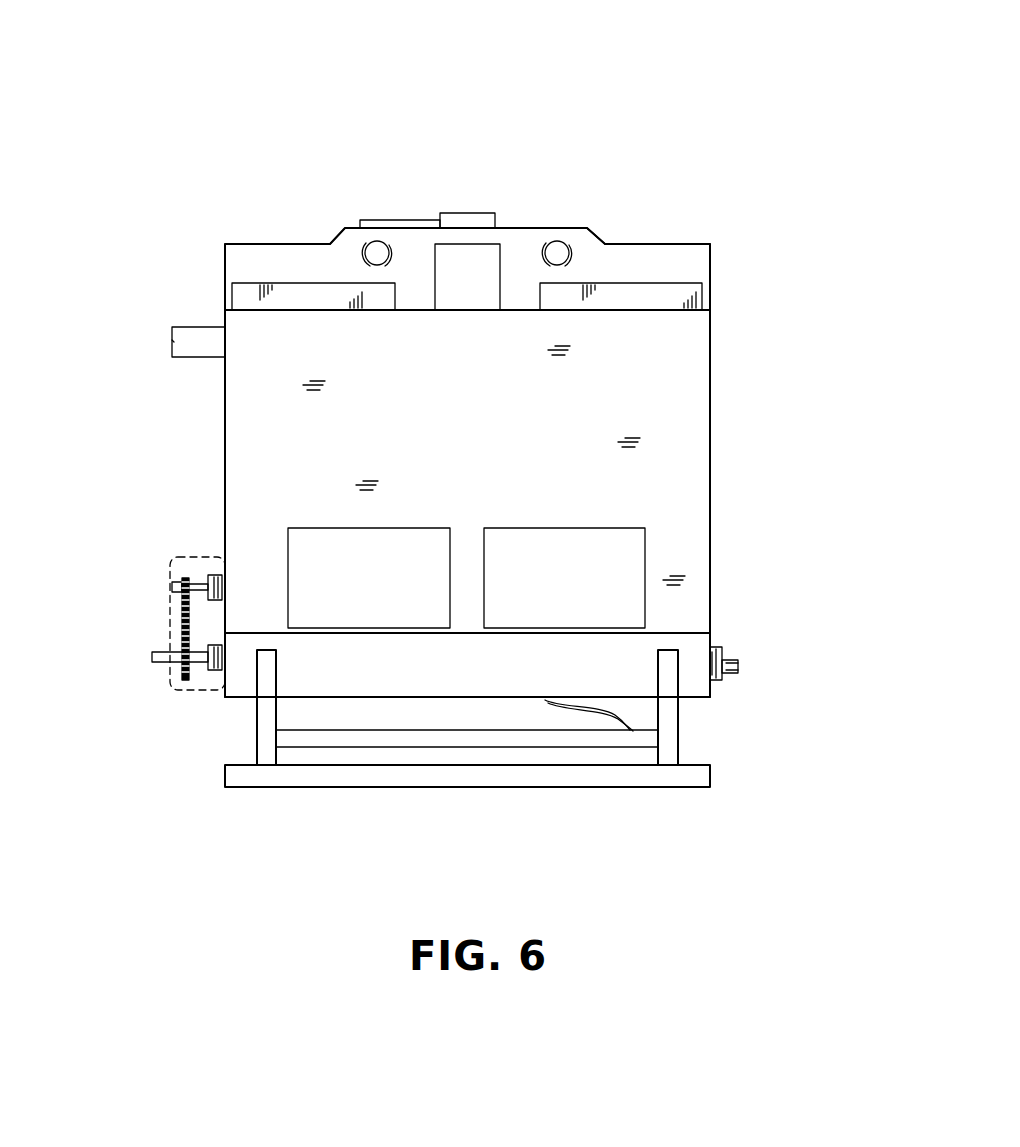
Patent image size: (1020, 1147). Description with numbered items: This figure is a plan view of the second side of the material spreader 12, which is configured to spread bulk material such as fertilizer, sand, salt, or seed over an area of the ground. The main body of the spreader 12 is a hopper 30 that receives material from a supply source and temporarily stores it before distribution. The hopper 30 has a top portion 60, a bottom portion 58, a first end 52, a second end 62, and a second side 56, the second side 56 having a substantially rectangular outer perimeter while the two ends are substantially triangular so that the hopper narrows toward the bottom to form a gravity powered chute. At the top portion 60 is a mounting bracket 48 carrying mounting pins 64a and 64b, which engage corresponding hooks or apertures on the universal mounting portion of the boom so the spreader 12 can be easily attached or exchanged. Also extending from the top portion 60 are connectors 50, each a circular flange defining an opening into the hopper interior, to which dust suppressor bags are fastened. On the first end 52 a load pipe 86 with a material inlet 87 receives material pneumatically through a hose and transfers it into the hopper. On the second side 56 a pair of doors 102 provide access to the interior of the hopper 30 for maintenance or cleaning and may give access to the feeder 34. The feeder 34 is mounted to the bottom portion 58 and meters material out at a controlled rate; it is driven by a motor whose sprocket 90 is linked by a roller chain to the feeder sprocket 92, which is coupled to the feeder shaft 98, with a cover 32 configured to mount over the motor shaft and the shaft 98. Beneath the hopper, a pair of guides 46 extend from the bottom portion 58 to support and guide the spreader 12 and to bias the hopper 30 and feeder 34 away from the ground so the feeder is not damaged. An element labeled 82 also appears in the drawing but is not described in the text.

The spreader 12 is at (744, 108).
The hopper 30 is at (690, 418).
The cover 32 is at (168, 610).
The feeder 34 is at (433, 680).
The guides 46 is at (720, 779).
The mounting bracket 48 is at (655, 253).
The connectors 50 is at (285, 285).
The first end 52 is at (220, 468).
The second side 56 is at (480, 441).
The bottom portion 58 is at (764, 674).
The top portion 60 is at (726, 265).
The second end 62 is at (710, 517).
The mounting pin 64a is at (557, 250).
The mounting pin 64b is at (377, 250).
The cover 82 is at (470, 213).
The load pipe 86 is at (205, 328).
The material inlet 87 is at (168, 342).
The sprocket 90 is at (183, 580).
The sprocket 92 is at (178, 680).
The shaft 98 is at (152, 655).
The doors 102 is at (388, 594).